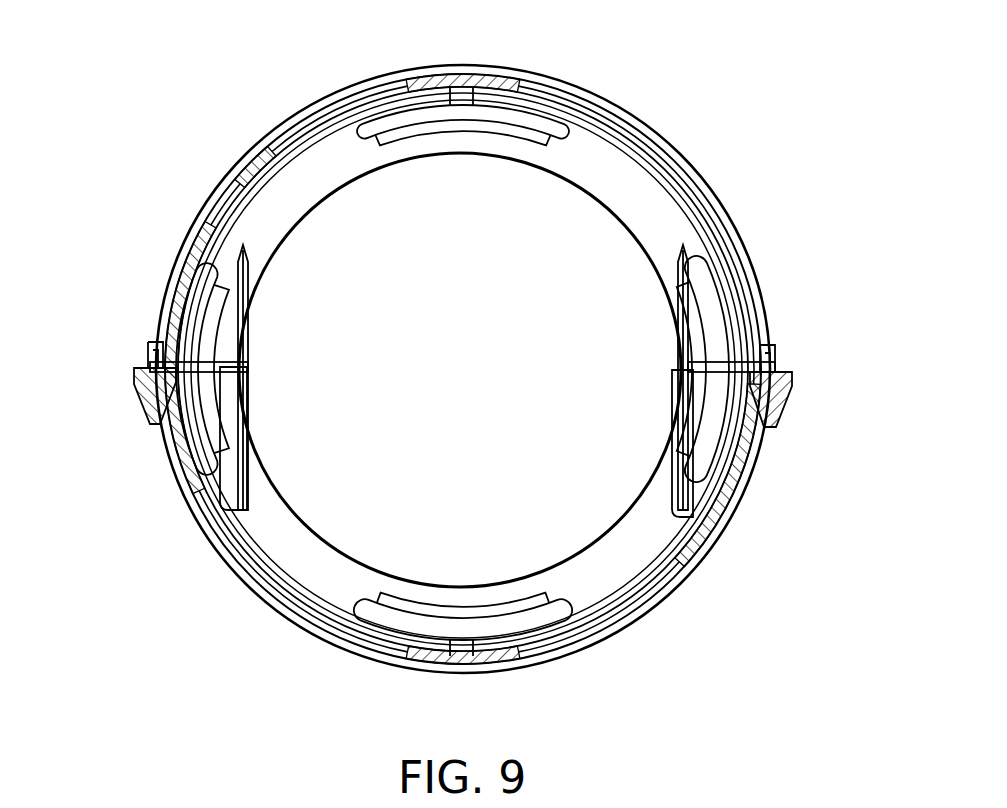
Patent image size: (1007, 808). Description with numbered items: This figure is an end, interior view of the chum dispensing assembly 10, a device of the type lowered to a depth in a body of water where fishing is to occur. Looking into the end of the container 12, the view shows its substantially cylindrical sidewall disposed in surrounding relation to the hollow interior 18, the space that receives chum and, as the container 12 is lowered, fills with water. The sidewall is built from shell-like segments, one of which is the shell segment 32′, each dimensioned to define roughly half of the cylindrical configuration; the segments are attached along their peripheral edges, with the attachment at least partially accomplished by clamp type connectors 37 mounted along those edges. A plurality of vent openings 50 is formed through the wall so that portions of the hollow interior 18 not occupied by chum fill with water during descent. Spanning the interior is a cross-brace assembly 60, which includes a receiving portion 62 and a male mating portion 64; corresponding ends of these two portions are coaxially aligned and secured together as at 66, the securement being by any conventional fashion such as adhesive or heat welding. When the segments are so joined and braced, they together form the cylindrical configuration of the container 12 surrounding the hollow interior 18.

The chum dispensing assembly 10 is at (272, 95).
The container 12 is at (650, 114).
The hollow interior 18 is at (486, 384).
The shell-like segment 32′ is at (705, 565).
The clamp type connector 37 is at (165, 360).
The vent opening 50 is at (535, 92).
The cross-brace assembly 60 is at (270, 338).
The receiving portion 62 is at (252, 455).
The male mating portion 64 is at (251, 306).
The securement 66 is at (246, 365).